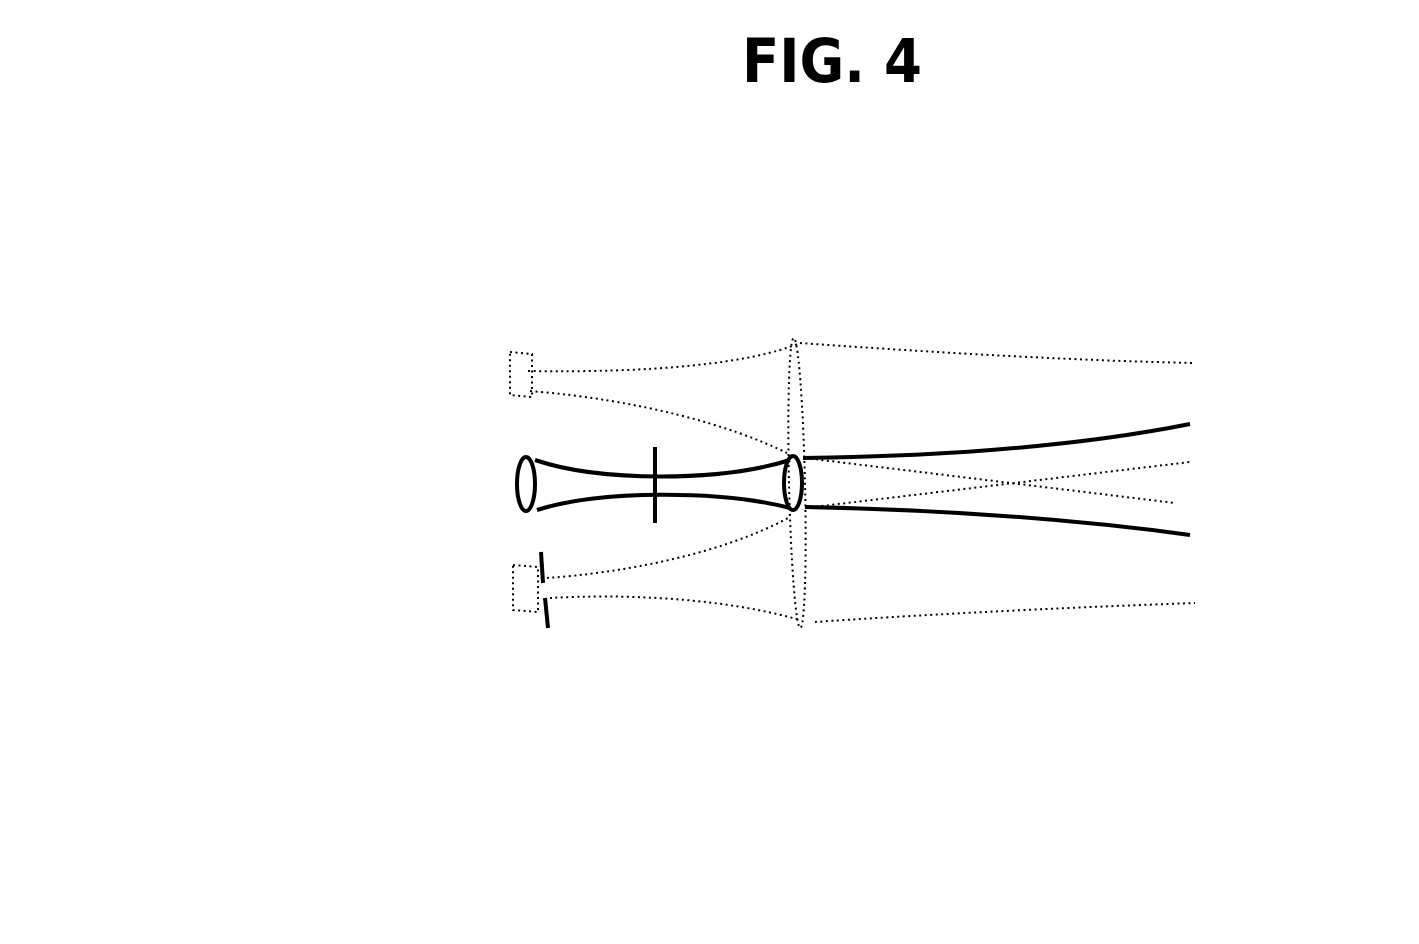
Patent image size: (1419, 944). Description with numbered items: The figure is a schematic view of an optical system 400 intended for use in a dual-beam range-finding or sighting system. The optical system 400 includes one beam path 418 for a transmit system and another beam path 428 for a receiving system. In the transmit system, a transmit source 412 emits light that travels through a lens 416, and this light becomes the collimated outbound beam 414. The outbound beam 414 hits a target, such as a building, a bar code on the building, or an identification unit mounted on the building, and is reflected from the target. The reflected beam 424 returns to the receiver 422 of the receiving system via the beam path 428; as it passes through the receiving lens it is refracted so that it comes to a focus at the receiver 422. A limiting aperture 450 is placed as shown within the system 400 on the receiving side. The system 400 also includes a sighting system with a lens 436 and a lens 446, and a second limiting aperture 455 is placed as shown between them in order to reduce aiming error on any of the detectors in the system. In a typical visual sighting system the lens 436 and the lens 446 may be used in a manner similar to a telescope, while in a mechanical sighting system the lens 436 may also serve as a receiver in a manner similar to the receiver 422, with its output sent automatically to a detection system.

The optical system 400 is at (328, 856).
The transmit source 412 is at (531, 369).
The outbound beam 414 is at (1128, 400).
The lens 416 is at (798, 370).
The beam path 418 is at (1290, 403).
The receiver 422 is at (527, 600).
The reflected beam 424 is at (1125, 558).
The beam path 428 is at (1290, 560).
The lens 436 is at (538, 458).
The lens 446 is at (792, 477).
The limiting aperture 450 is at (553, 615).
The second limiting aperture 455 is at (809, 830).